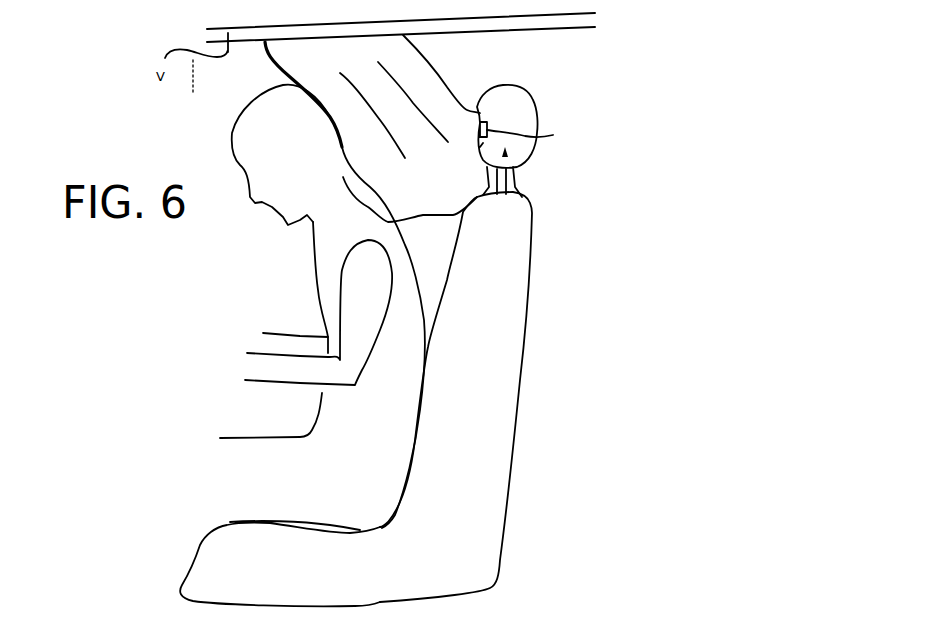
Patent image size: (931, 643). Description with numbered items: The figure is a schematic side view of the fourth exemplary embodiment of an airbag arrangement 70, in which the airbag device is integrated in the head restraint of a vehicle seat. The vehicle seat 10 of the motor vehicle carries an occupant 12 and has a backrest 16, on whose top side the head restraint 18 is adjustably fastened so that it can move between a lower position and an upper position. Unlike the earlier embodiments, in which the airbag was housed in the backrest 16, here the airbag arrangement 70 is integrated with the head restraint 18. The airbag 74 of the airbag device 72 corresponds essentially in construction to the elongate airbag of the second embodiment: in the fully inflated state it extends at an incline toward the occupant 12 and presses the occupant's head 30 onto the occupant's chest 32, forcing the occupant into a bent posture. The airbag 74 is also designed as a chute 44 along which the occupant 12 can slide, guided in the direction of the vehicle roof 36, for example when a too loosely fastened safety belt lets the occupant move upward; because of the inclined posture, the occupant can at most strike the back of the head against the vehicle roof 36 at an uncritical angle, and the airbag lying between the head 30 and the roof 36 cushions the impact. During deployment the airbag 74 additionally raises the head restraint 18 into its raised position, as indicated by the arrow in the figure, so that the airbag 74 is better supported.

The vehicle seat 10 is at (395, 399).
The occupant 12 is at (305, 306).
The backrest 16 is at (503, 308).
The head restraint 18 is at (523, 116).
The occupant's head 30 is at (255, 145).
The occupant's chest 32 is at (332, 297).
The vehicle roof 36 is at (572, 27).
The chute 44 is at (280, 78).
The airbag arrangement 70 is at (494, 98).
The airbag device 72 is at (534, 133).
The airbag 74 is at (435, 97).